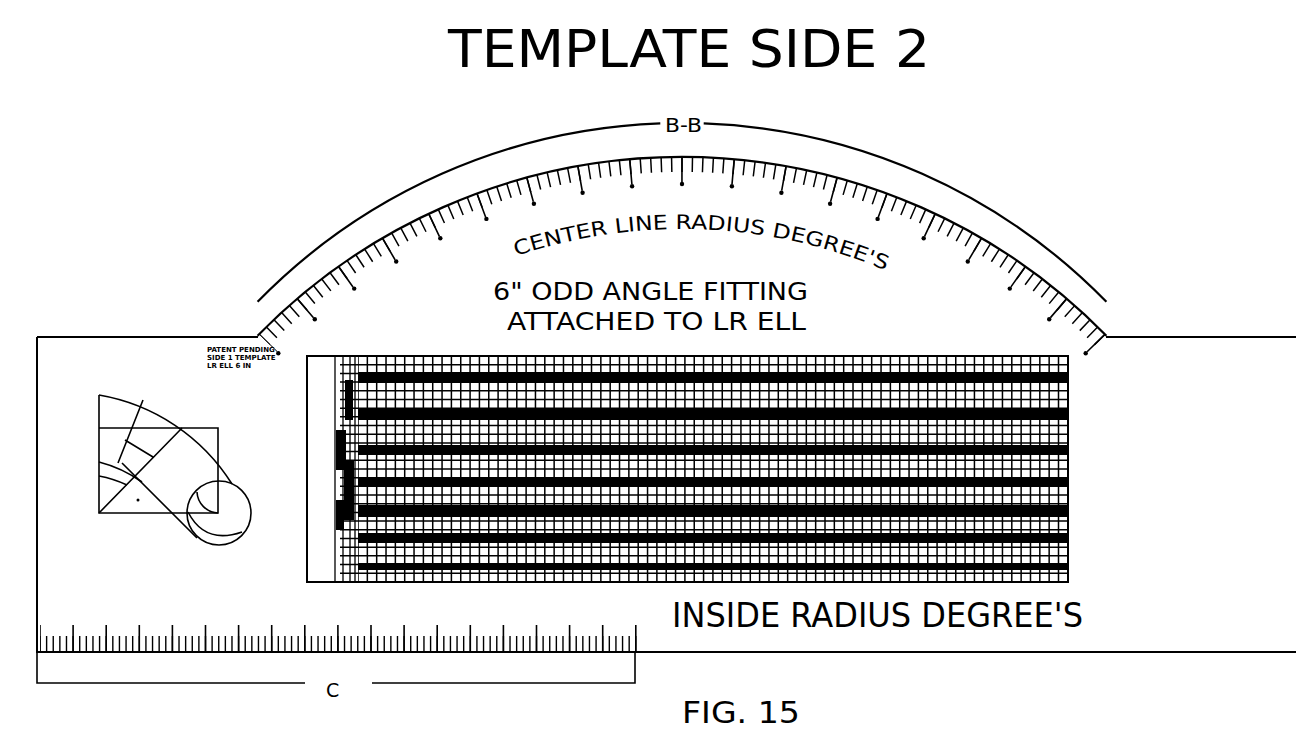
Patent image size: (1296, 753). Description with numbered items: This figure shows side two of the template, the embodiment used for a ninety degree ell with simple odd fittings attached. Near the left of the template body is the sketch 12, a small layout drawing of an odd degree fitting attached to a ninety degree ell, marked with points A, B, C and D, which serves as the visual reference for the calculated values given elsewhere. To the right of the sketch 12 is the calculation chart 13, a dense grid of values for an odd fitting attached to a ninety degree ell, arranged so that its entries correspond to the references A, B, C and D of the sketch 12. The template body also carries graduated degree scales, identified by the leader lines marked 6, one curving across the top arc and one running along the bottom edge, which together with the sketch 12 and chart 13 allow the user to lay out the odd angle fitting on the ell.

The degree scale 6 is at (363, 250).
The sketch 12 is at (143, 400).
The calculation chart 13 is at (305, 427).